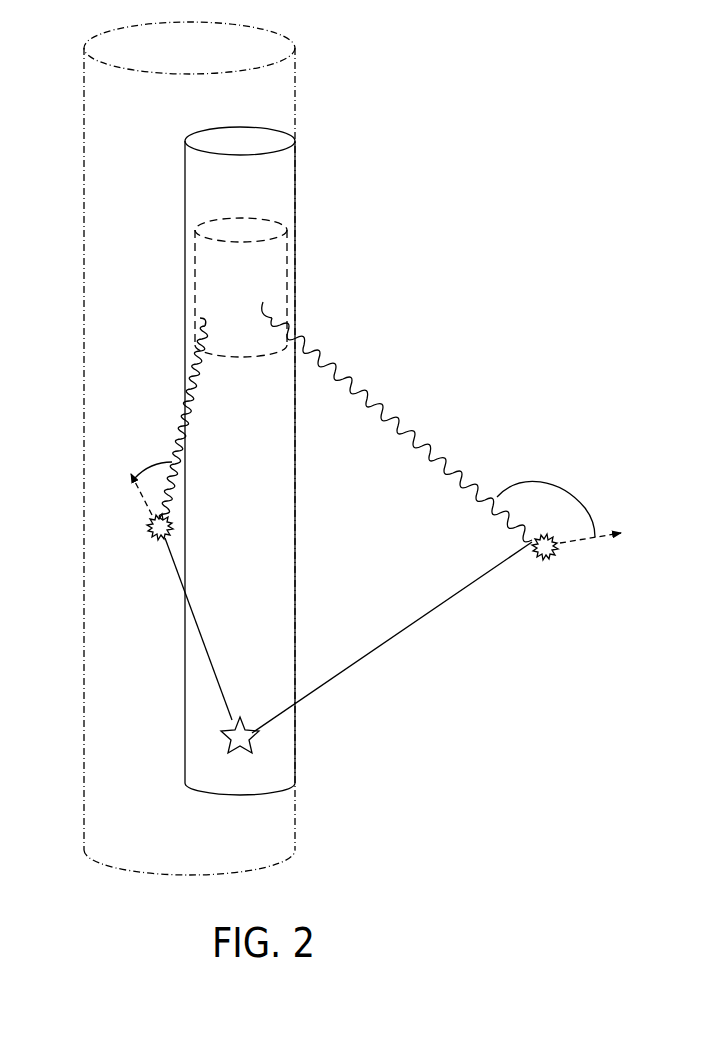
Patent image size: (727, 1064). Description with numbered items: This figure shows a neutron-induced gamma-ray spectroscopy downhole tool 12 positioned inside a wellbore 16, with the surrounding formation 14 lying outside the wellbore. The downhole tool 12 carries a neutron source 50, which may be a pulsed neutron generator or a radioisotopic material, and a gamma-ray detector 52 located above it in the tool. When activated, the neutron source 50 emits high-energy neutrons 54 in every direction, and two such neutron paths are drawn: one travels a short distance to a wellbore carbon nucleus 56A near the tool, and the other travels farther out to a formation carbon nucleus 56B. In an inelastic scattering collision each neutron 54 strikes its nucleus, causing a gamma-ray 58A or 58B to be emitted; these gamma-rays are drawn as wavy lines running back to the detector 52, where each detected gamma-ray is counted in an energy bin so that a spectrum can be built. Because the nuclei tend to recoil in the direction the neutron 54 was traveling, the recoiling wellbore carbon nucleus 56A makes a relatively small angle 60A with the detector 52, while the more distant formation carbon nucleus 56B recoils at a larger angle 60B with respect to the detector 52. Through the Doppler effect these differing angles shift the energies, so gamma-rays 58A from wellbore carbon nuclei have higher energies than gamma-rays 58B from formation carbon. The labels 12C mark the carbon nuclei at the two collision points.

The wellbore 16 is at (110, 235).
The downhole tool 12 is at (277, 182).
The gamma-ray detector 52 is at (293, 270).
The formation 14 is at (464, 320).
The gamma-ray 58A is at (182, 418).
The gamma-ray 58B is at (393, 407).
The angle 60A is at (150, 468).
The angle 60B is at (558, 487).
The wellbore carbon nucleus 56A is at (155, 540).
The formation carbon nucleus 56B is at (560, 553).
The carbon nucleus 12C is at (335, 553).
The high-energy neutron 54 is at (210, 665).
The neutron source 50 is at (258, 740).